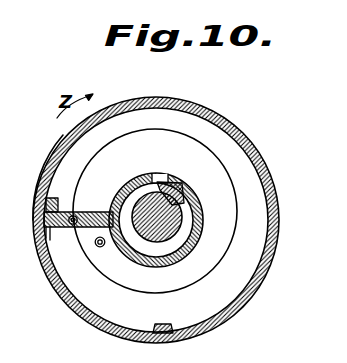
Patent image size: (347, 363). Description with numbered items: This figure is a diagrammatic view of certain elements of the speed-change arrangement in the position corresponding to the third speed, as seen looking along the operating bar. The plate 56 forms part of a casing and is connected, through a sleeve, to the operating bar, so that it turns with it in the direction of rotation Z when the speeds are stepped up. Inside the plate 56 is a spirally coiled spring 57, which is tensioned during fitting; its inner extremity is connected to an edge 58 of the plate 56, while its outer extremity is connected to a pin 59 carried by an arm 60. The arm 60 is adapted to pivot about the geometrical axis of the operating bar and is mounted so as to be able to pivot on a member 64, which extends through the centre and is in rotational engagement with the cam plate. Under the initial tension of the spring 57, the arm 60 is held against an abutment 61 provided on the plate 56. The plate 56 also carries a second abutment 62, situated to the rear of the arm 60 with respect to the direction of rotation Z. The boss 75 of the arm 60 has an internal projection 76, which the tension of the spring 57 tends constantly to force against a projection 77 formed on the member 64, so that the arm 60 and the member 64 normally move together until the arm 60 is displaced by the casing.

The plate 56 is at (262, 160).
The spirally coiled spring 57 is at (240, 208).
The edge 58 is at (100, 247).
The pin 59 is at (73, 224).
The arm 60 is at (35, 247).
The abutment 61 is at (47, 198).
The abutment 62 is at (157, 325).
The member 64 is at (162, 240).
The boss 75 is at (203, 232).
The internal projection 76 is at (152, 174).
The projection 77 is at (160, 190).